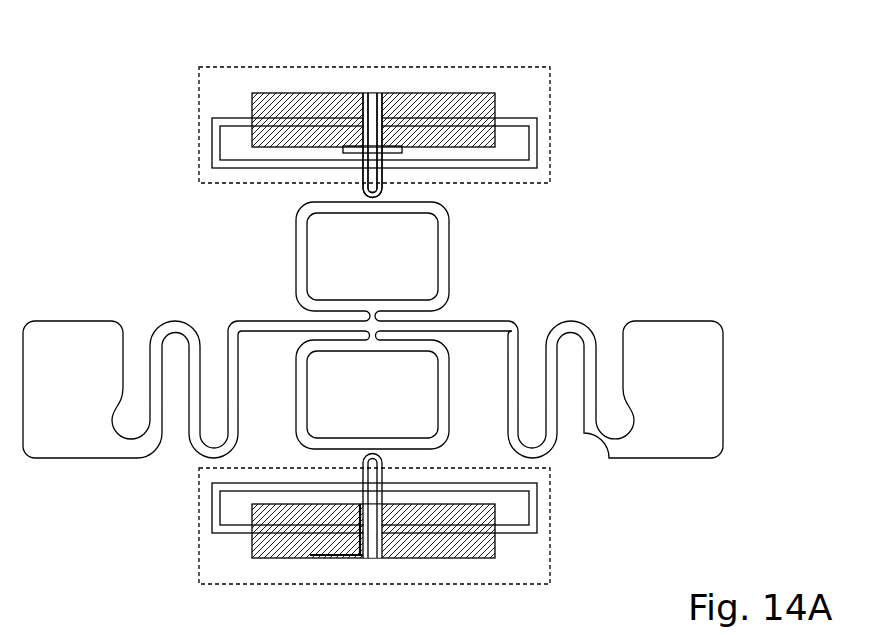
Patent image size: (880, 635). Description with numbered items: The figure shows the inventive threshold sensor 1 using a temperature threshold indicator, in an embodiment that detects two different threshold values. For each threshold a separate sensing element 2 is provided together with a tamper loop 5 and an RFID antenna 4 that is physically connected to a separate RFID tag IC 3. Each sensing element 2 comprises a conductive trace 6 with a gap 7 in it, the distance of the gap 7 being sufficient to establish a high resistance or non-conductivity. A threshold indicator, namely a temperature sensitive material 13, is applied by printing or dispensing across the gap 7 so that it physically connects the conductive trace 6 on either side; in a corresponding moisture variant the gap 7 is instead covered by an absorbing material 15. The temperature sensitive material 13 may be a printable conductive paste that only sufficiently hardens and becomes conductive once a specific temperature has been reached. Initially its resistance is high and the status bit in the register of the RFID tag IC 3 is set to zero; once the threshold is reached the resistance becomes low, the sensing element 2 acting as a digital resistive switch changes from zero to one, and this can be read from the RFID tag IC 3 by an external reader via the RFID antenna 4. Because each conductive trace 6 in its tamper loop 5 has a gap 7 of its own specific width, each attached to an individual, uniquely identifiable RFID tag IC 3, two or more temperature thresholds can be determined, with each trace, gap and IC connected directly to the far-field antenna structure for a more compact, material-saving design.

The threshold sensor 1 is at (636, 45).
The sensing element 2 is at (385, 183).
The RFID tag IC 3 is at (370, 438).
The RFID antenna 4 is at (615, 328).
The tamper loop 5 is at (552, 106).
The conductive trace 6 is at (212, 121).
The gap 7 is at (370, 92).
The temperature sensitive material 13 is at (423, 102).
The absorbing material 15 is at (373, 325).